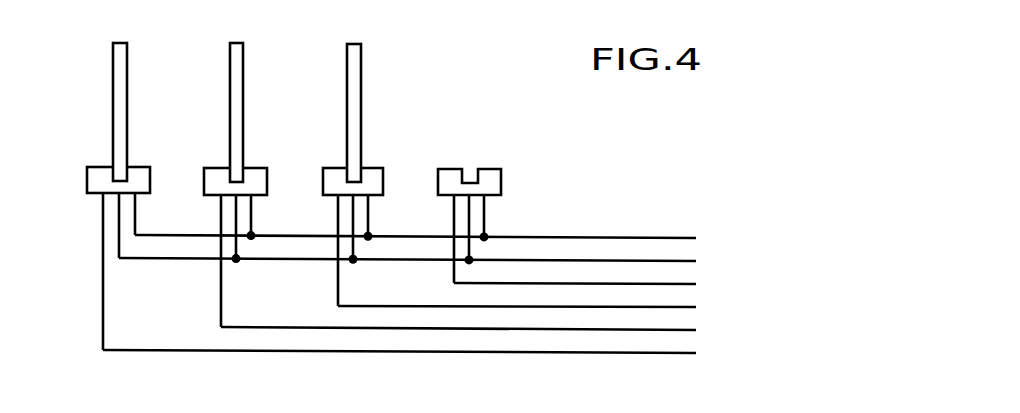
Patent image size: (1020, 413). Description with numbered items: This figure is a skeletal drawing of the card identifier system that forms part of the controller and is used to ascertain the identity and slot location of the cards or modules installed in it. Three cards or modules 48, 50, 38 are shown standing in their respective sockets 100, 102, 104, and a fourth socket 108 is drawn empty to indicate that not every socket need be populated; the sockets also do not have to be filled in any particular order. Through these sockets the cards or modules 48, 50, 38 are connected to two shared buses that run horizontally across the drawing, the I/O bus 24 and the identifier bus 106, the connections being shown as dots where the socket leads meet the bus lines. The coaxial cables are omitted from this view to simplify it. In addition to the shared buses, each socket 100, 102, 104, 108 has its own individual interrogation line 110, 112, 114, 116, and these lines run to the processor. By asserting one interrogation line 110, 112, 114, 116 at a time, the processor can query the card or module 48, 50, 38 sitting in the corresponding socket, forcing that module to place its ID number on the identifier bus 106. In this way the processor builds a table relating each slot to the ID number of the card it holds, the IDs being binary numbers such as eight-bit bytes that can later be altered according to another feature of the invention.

The I/O bus 24 is at (536, 237).
The card or module 38 is at (355, 105).
The card or module 48 is at (118, 80).
The card or module 50 is at (237, 80).
The socket 100 is at (95, 183).
The socket 102 is at (222, 172).
The socket 104 is at (332, 174).
The identifier bus 106 is at (193, 262).
The unpopulated socket 108 is at (490, 177).
The interrogation line 110 is at (548, 353).
The interrogation line 112 is at (360, 330).
The interrogation line 114 is at (338, 283).
The interrogation line 116 is at (453, 272).